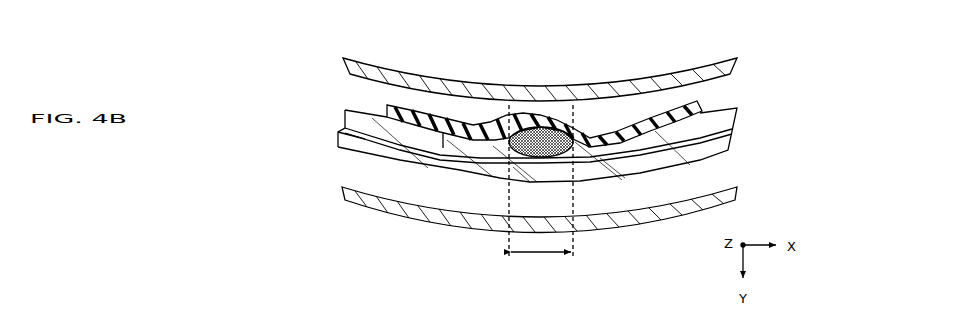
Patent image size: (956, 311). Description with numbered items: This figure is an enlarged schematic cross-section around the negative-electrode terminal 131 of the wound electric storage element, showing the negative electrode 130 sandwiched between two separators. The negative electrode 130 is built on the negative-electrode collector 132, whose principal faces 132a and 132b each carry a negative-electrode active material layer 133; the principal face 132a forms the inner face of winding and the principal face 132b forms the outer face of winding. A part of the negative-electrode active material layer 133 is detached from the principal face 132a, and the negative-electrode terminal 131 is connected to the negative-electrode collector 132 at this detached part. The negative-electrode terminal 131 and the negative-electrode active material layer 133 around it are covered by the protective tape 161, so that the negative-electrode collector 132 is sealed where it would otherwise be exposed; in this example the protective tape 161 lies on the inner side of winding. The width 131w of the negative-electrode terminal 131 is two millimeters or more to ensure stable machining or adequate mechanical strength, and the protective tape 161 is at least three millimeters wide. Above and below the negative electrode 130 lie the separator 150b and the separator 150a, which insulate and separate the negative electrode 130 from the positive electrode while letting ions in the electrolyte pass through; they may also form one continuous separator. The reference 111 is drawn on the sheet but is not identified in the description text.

The housing 111 is at (657, 50).
The negative electrode 130 is at (557, 157).
The negative-electrode terminal 131 is at (542, 133).
The width of the negative-electrode terminal 131w is at (541, 265).
The negative-electrode collector 132 is at (736, 131).
The principal face of the negative-electrode collector 132a is at (370, 127).
The principal face of the negative-electrode collector 132b is at (368, 158).
The negative-electrode active material layer 133 is at (733, 118).
The protective tape 161 is at (512, 128).
The separator 150a is at (342, 194).
The separator 150b is at (343, 64).